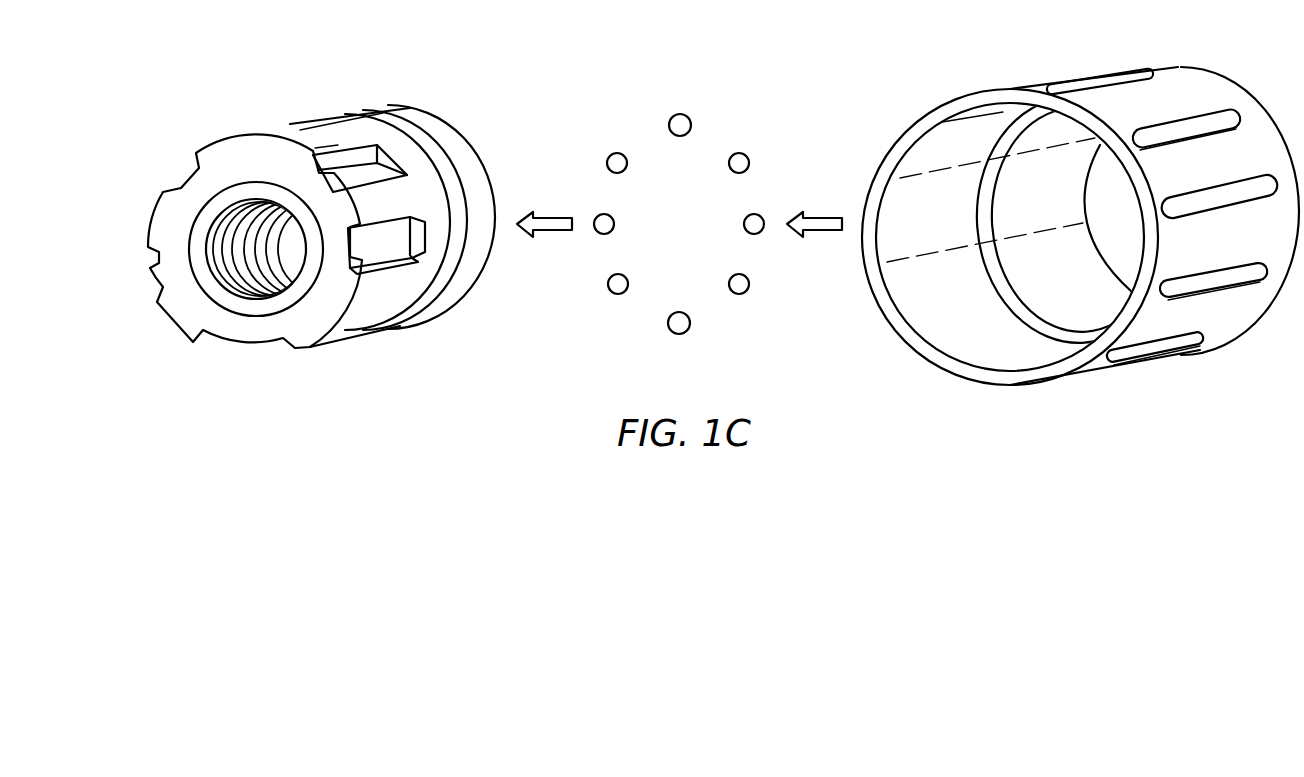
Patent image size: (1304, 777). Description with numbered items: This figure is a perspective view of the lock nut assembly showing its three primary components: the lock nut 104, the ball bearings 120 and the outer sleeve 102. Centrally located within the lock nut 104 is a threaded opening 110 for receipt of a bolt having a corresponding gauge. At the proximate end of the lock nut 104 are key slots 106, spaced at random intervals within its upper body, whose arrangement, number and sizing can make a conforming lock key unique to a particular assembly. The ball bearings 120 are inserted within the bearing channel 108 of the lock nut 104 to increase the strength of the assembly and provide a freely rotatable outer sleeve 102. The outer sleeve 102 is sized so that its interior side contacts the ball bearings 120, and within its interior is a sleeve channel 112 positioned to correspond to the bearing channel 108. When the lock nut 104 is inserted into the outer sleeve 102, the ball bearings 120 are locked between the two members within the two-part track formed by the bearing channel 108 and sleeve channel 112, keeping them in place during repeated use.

The outer sleeve 102 is at (1080, 214).
The lock nut 104 is at (284, 227).
The key slots 106 is at (186, 186).
The bearing channel 108 is at (358, 112).
The threaded opening 110 is at (236, 241).
The sleeve channel 112 is at (1002, 268).
The ball bearings 120 is at (687, 114).